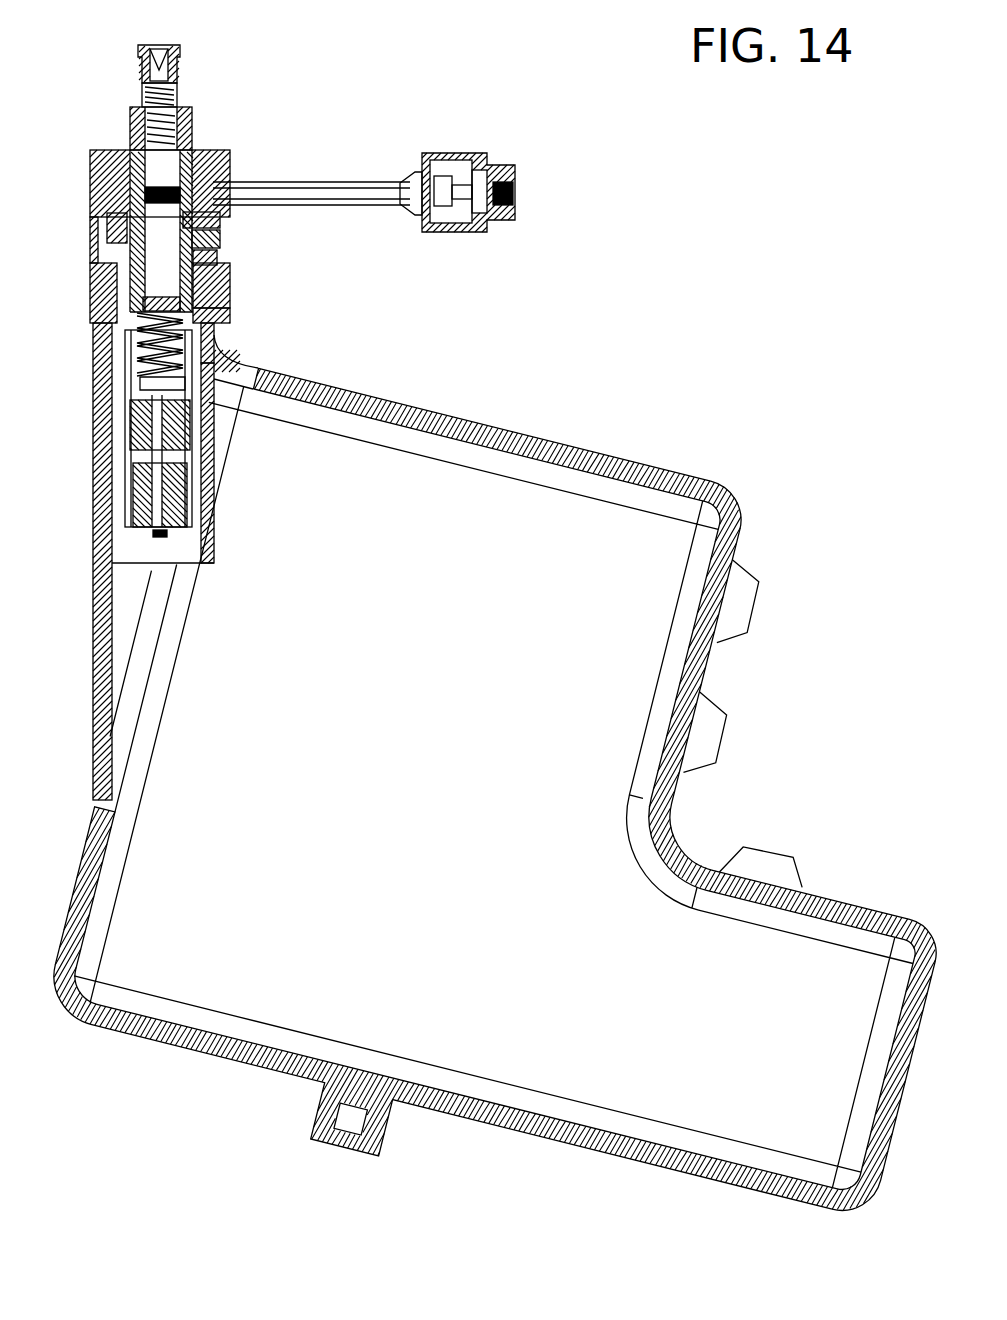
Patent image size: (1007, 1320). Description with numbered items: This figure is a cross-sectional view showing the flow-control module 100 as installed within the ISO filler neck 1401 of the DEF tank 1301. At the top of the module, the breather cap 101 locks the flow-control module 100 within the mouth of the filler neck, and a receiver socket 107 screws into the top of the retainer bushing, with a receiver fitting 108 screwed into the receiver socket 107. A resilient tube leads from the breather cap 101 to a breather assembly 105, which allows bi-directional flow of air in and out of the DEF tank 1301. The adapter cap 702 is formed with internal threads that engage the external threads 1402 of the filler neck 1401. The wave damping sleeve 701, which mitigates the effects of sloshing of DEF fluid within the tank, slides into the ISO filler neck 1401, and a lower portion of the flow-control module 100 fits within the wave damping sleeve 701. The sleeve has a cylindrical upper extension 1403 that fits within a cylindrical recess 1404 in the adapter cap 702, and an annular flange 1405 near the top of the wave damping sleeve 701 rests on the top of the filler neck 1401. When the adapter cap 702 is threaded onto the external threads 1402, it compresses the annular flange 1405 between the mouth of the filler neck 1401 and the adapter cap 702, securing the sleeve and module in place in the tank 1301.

The flow-control module 100 is at (302, 159).
The breather cap 101 is at (229, 165).
The breather assembly 105 is at (476, 226).
The receiver socket 107 is at (193, 131).
The receiver fitting 108 is at (181, 89).
The wave damping sleeve 701 is at (215, 337).
The adapter cap 702 is at (108, 229).
The DEF tank 1301 is at (558, 438).
The ISO filler neck 1401 is at (228, 291).
The external threads 1402 is at (221, 307).
The cylindrical upper extension 1403 is at (219, 248).
The cylindrical recess 1404 is at (222, 230).
The annular flange 1405 is at (226, 266).